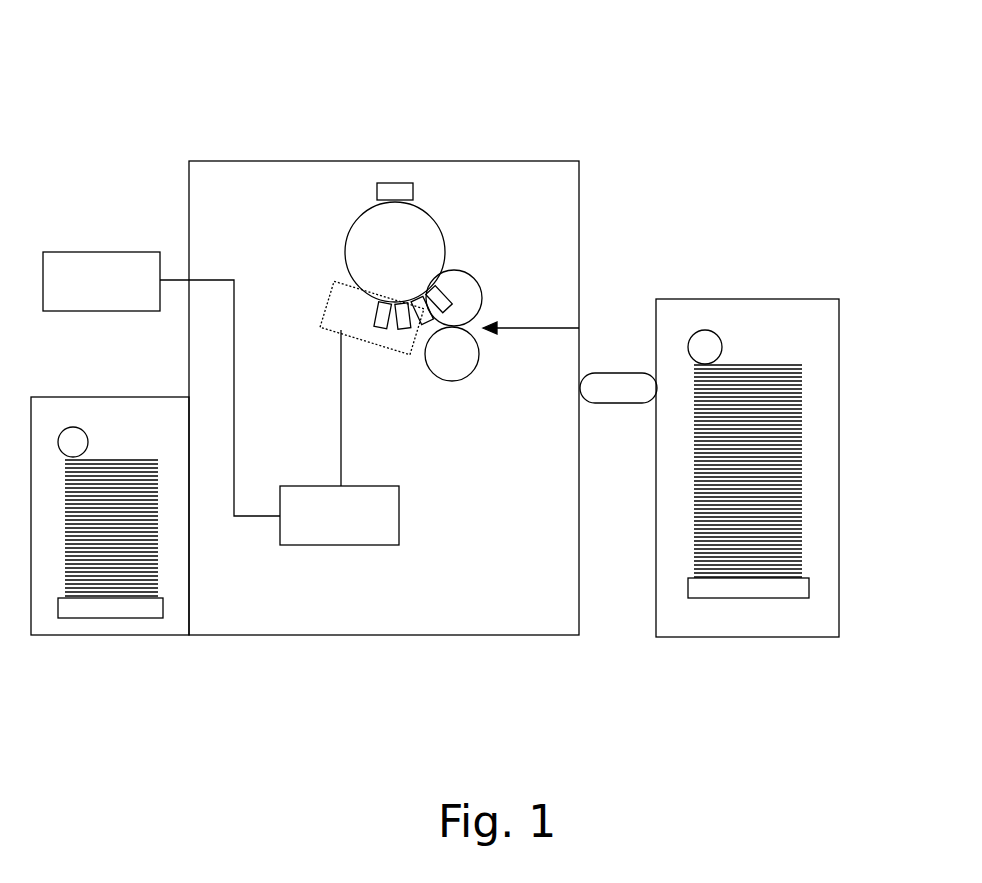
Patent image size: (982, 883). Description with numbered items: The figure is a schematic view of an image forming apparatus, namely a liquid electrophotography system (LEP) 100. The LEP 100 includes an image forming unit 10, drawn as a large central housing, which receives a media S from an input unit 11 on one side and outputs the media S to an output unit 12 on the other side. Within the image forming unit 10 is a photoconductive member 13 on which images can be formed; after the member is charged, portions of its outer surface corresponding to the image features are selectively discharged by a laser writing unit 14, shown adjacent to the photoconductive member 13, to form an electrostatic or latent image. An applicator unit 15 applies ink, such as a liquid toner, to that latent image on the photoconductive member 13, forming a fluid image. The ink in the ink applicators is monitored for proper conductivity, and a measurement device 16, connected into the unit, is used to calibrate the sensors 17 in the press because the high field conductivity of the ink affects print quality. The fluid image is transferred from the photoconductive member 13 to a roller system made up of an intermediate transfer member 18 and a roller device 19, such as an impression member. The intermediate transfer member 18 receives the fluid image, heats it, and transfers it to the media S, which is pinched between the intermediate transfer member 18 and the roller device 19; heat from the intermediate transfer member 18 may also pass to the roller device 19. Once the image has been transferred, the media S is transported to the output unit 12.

The liquid electrophotography system 100 is at (407, 35).
The image forming unit 10 is at (360, 161).
The input unit 11 is at (715, 299).
The output unit 12 is at (100, 397).
The photoconductive member 13 is at (408, 263).
The laser writing unit 14 is at (408, 183).
The applicator unit 15 is at (358, 344).
The measurement device 16 is at (114, 292).
The sensors 17 is at (352, 526).
The intermediate transfer member 18 is at (467, 309).
The roller device 19 is at (465, 365).
The media S is at (768, 365).